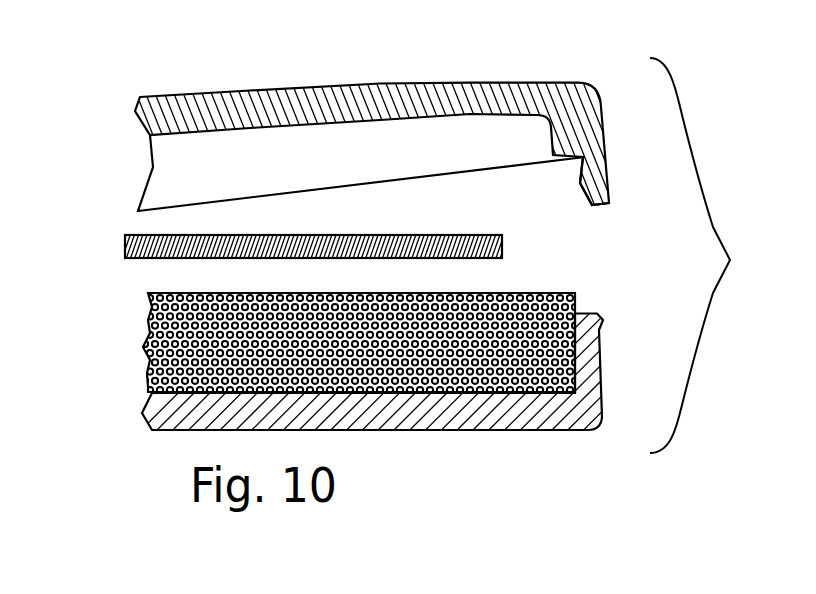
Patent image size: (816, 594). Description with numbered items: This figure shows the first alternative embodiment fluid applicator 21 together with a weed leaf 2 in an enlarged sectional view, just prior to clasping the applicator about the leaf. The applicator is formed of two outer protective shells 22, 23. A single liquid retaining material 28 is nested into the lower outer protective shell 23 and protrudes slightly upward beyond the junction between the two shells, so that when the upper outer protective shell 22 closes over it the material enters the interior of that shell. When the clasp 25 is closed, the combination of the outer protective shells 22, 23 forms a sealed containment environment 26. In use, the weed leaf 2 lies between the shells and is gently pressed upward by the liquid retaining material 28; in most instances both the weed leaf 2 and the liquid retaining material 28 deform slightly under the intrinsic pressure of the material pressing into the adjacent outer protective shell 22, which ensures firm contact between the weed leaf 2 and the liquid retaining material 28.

The first alternative embodiment fluid applicator 21 is at (410, 250).
The outer protective shell 22 is at (443, 83).
The clasp 25 is at (611, 193).
The sealed containment environment 26 is at (299, 174).
The weed leaf 2 is at (144, 259).
The liquid retaining material 28 is at (426, 356).
The outer protective shell 23 is at (411, 431).